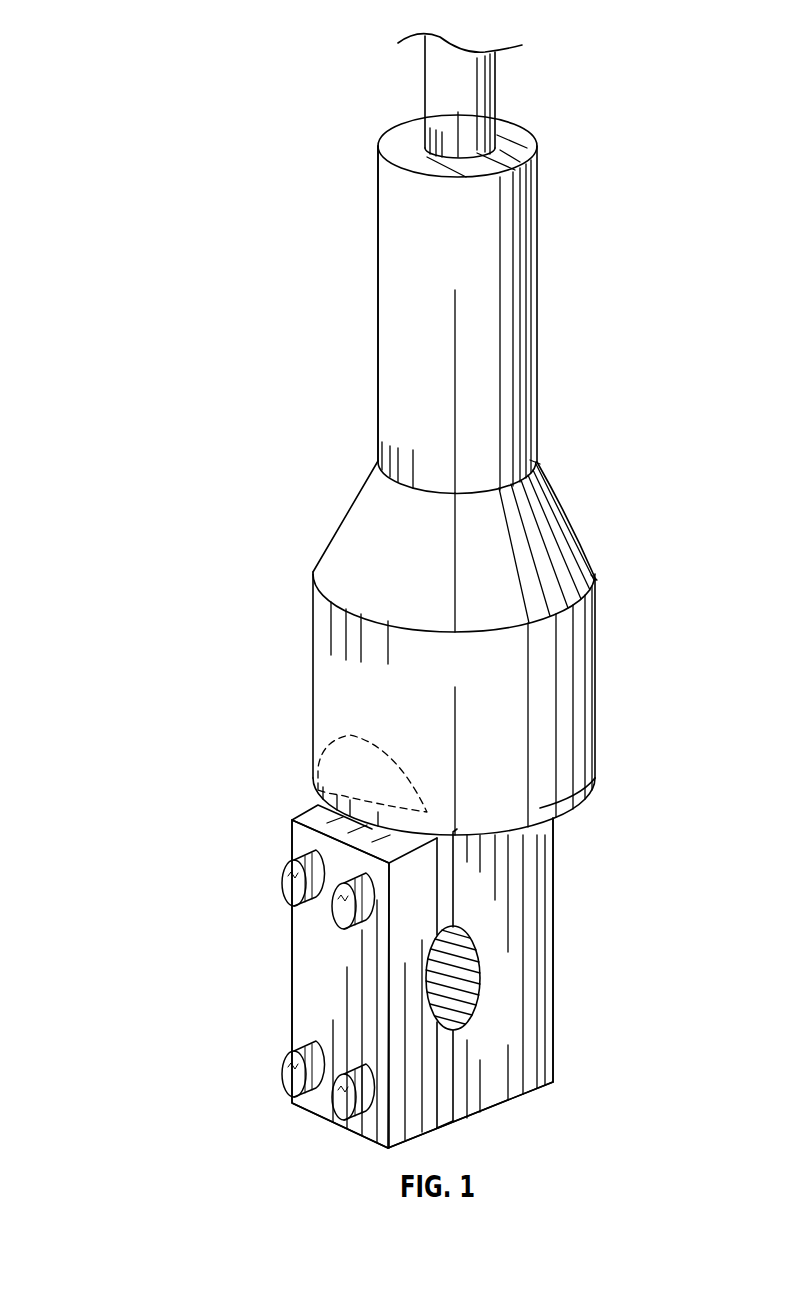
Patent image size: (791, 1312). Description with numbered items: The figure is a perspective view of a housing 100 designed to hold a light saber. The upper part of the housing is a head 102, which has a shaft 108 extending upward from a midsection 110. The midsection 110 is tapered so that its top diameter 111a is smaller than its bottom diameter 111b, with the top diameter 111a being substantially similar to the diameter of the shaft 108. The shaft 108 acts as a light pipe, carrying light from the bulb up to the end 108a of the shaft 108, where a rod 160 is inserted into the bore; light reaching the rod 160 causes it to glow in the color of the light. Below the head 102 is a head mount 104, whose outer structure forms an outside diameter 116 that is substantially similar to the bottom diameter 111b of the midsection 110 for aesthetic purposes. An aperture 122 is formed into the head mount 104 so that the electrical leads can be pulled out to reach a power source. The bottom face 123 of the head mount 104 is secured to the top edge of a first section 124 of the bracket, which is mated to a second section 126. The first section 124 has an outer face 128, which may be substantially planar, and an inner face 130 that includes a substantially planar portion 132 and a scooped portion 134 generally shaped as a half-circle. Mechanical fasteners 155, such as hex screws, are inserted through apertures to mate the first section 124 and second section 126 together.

The housing 100 is at (97, 207).
The rod 160 is at (445, 92).
The end of the shaft 108a is at (520, 133).
The shaft 108 is at (523, 257).
The head 102 is at (348, 368).
The top diameter of the midsection 111a is at (534, 463).
The midsection 110 is at (555, 545).
The bottom diameter of the midsection 111b is at (596, 582).
The outside diameter of the head mount 116 is at (580, 698).
The head mount 104 is at (295, 663).
The aperture 122 is at (352, 765).
The bottom face of the head mount 123 is at (572, 806).
The mechanical fasteners 155 is at (283, 877).
The substantially planar portion 132 is at (453, 892).
The first section 124 is at (540, 937).
The second section 126 is at (298, 968).
The scooped portion 134 is at (462, 982).
The outer face 128 is at (552, 1065).
The inner face 130 is at (452, 1062).